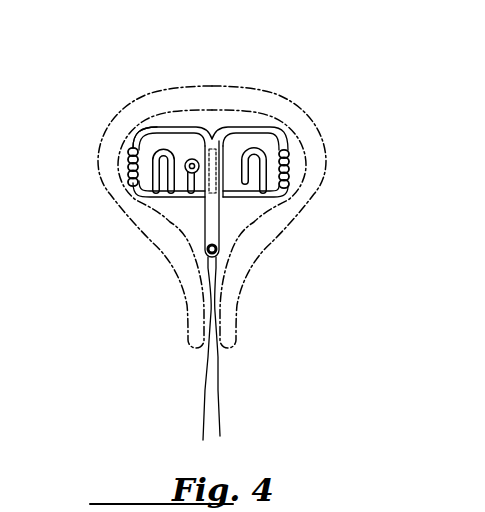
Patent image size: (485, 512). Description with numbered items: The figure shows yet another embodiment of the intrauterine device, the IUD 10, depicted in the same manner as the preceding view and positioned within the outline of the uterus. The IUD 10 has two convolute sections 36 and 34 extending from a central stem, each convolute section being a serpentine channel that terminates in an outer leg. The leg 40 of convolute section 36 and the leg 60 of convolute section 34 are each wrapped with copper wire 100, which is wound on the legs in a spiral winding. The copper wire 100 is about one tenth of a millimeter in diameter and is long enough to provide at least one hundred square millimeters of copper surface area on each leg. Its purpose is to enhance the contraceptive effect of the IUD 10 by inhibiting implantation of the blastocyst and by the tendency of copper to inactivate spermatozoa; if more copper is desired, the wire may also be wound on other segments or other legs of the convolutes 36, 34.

The IUD 10 is at (206, 239).
The convolute section 34 is at (268, 115).
The convolute section 36 is at (170, 121).
The leg 40 is at (136, 136).
The leg 60 is at (290, 137).
The copper wire 100 is at (128, 165).